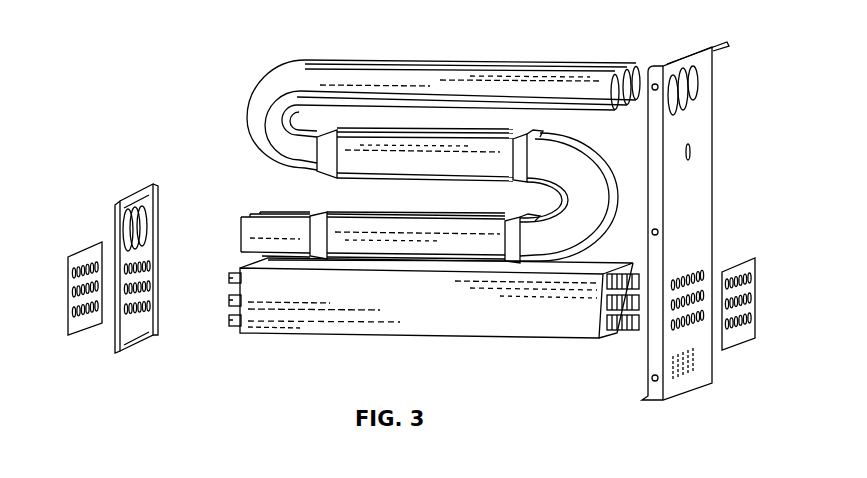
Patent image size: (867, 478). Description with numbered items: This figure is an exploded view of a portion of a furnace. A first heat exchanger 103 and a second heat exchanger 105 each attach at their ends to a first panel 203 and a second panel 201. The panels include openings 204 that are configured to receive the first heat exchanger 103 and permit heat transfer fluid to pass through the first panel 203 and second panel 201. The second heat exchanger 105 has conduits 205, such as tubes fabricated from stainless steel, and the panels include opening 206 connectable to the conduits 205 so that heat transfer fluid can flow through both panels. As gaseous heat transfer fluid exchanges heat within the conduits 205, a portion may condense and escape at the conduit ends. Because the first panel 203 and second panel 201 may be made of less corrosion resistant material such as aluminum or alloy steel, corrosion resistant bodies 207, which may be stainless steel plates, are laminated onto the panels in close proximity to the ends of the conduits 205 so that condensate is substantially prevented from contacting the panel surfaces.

The first heat exchanger 103 is at (443, 82).
The second heat exchanger 105 is at (453, 328).
The second panel 201 is at (695, 57).
The first panel 203 is at (153, 198).
The openings 204 is at (698, 88).
The conduits 205 is at (231, 278).
The opening 206 is at (143, 282).
The corrosion resistant bodies 207 is at (83, 323).